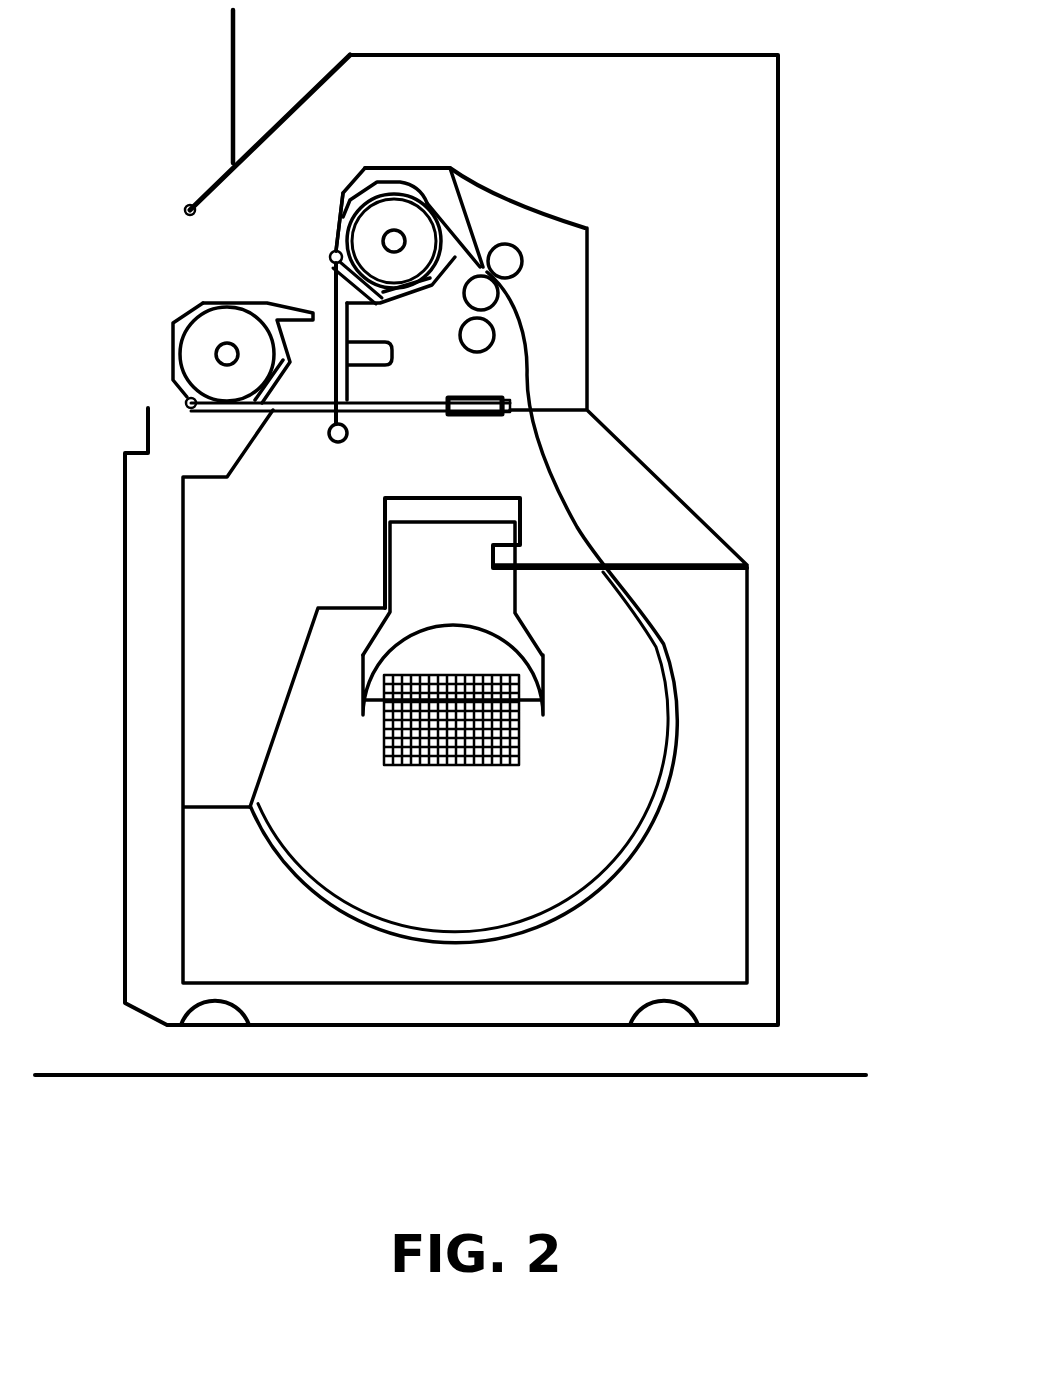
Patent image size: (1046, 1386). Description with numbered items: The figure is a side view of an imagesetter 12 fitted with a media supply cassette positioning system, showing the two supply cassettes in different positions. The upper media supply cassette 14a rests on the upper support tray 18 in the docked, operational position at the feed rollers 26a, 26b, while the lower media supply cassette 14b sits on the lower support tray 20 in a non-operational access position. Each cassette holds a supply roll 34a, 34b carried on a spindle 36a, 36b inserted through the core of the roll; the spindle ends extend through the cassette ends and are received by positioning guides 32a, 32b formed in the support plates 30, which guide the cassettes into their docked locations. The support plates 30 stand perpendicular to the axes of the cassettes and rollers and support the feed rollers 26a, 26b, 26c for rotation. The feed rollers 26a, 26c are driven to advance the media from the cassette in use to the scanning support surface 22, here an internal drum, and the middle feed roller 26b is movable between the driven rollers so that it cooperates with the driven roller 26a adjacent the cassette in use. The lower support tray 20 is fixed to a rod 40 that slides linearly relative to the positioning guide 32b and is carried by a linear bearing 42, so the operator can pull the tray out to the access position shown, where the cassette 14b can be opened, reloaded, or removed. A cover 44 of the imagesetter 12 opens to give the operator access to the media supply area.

The imagesetter 12 is at (778, 190).
The media supply cassette 14a is at (440, 213).
The media supply cassette 14b is at (195, 330).
The upper support tray 18 is at (330, 262).
The lower support tray 20 is at (237, 410).
The scanning support surface 22 is at (606, 885).
The feed roller 26a is at (523, 267).
The middle feed roller 26b is at (498, 300).
The feed roller 26c is at (496, 342).
The support plate 30 is at (585, 228).
The positioning guide 32a is at (347, 210).
The positioning guide 32b is at (388, 362).
The supply roll 34a is at (345, 217).
The supply roll 34b is at (216, 353).
The spindle 36a is at (403, 232).
The spindle 36b is at (182, 372).
The rod 40 is at (385, 412).
The linear bearing 42 is at (455, 416).
The cover 44 is at (233, 38).